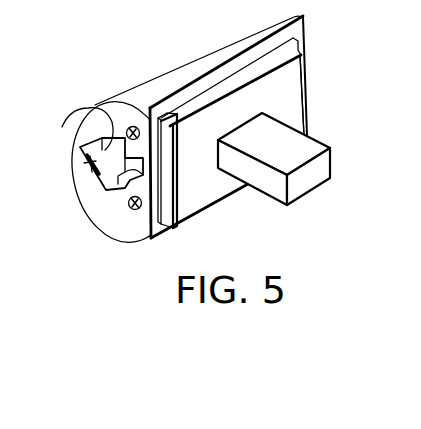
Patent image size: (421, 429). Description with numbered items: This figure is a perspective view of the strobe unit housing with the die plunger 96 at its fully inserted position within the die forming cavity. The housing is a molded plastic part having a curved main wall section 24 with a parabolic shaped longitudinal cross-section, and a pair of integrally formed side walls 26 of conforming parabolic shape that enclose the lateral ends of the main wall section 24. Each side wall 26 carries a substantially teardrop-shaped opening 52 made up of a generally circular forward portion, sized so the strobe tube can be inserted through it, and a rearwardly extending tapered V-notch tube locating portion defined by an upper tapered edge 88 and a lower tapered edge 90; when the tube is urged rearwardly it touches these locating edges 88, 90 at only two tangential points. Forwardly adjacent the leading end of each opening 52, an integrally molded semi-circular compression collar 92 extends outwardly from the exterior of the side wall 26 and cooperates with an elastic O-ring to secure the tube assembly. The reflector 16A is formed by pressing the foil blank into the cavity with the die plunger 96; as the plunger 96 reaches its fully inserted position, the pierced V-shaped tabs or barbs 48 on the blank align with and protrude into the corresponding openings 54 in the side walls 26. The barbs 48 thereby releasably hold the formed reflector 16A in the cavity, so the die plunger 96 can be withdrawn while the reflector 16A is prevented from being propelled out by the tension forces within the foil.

The reflector 16A is at (209, 97).
The curved main wall section 24 is at (227, 43).
The side walls 26 is at (113, 204).
The pierced V-shaped tabs or barbs 48 is at (168, 207).
The openings 52 is at (94, 172).
The openings 54 is at (133, 127).
The upper tapered edge 88 is at (80, 145).
The lower tapered edge 90 is at (87, 162).
The semi-circular compression collars 92 is at (98, 107).
The die plunger 96 is at (293, 96).